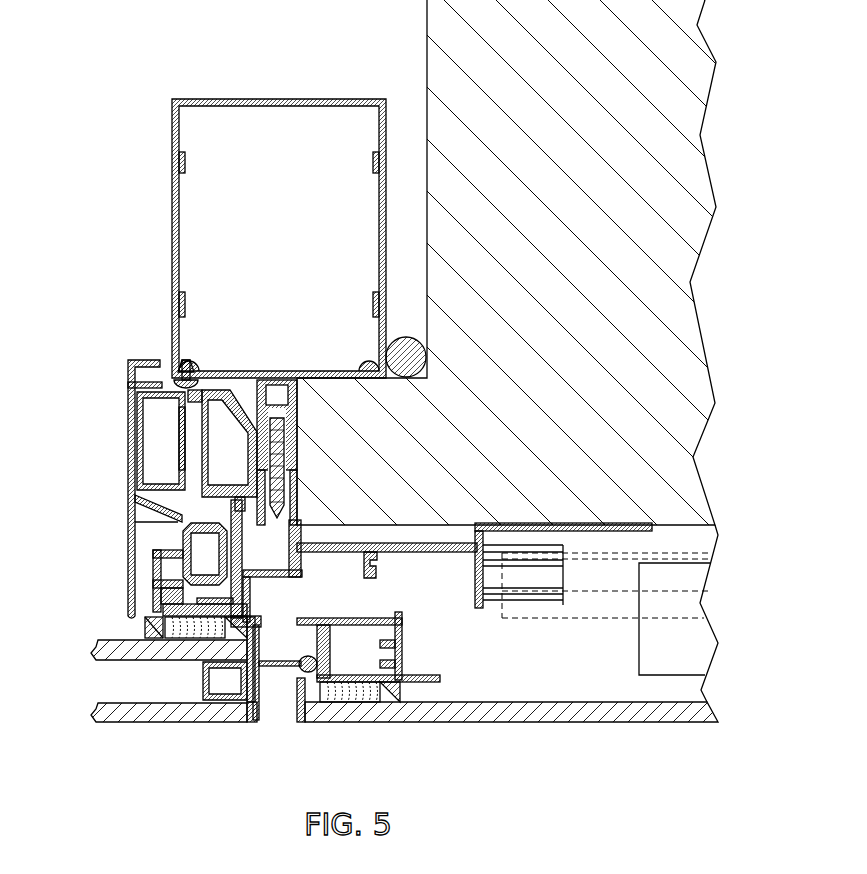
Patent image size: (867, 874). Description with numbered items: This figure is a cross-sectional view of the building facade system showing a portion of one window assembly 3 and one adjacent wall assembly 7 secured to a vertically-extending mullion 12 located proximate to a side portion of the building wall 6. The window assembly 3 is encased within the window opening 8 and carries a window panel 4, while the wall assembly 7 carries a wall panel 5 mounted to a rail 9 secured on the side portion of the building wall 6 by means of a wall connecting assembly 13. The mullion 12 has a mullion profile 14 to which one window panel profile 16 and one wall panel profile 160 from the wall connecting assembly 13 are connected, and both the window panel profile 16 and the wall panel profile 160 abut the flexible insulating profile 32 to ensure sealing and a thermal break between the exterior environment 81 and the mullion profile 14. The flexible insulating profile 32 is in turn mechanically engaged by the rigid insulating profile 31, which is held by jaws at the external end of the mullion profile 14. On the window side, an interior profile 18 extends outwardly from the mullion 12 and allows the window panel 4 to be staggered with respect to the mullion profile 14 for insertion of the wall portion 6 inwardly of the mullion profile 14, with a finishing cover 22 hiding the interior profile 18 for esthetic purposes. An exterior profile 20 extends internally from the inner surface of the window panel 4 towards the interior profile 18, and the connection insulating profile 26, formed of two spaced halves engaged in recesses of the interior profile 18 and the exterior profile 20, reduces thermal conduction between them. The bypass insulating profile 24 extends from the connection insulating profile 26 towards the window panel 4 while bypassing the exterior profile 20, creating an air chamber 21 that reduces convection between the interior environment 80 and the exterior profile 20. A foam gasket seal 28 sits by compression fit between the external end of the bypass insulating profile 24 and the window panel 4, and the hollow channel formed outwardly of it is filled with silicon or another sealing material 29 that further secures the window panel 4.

The window assembly 3 is at (146, 715).
The window panel 4 is at (86, 684).
The wall panel 5 is at (536, 714).
The building wall 6 is at (557, 325).
The wall assembly 7 is at (631, 742).
The window opening 8 is at (259, 238).
The rail 9 is at (490, 582).
The mullion 12 is at (171, 219).
The wall connecting assembly 13 is at (297, 690).
The mullion profile 14 is at (259, 410).
The window panel profile 16 is at (258, 713).
The interior profile 18 is at (142, 447).
The exterior profile 20 is at (187, 585).
The air chamber 21 is at (162, 590).
The finishing cover 22 is at (131, 405).
The bypass insulating profile 24 is at (158, 593).
The connection insulating profile 26 is at (184, 537).
The gasket seal 28 is at (150, 633).
The sealing material 29 is at (172, 642).
The rigid insulating profile 31 is at (277, 418).
The flexible insulating profile 32 is at (262, 483).
The interior environment 80 is at (140, 562).
The exterior environment 81 is at (350, 756).
The wall panel profile 160 is at (447, 553).